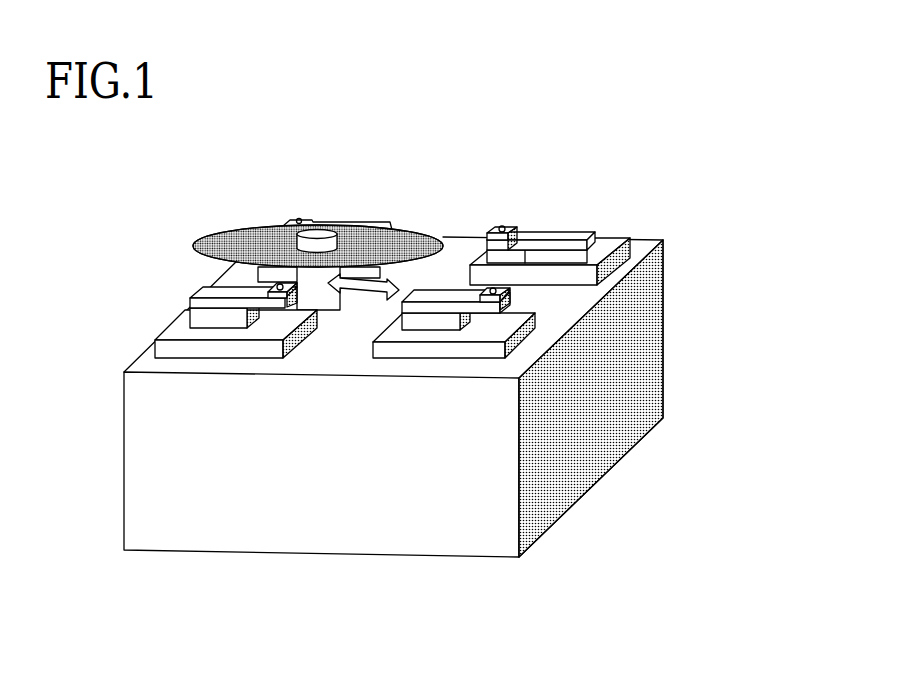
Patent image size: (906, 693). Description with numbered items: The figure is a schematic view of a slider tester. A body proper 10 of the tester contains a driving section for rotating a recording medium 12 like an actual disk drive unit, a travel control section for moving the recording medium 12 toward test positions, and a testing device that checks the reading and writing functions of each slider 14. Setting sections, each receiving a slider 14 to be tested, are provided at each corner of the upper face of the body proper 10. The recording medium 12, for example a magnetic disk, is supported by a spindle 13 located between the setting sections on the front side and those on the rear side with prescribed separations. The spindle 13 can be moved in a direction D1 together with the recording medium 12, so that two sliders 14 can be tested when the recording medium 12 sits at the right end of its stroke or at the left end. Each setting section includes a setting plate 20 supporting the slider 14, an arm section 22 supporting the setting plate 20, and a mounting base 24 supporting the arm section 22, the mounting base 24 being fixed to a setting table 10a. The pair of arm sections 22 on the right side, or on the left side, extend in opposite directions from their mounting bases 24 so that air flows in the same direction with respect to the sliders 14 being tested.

The body proper 10 is at (313, 542).
The setting table 10a is at (167, 350).
The recording medium 12 is at (238, 240).
The spindle 13 is at (326, 234).
The slider 14 is at (493, 290).
The setting plate 20 is at (273, 285).
The arm section 22 is at (217, 293).
The mounting base 24 is at (203, 317).
The direction D1 is at (368, 293).